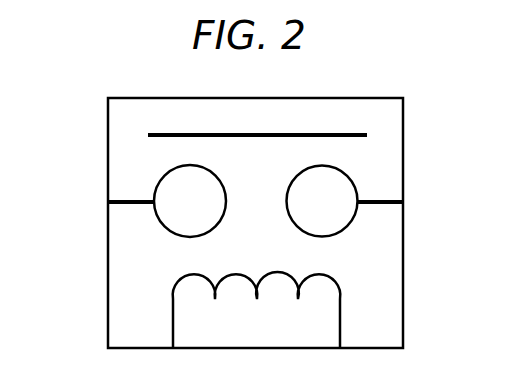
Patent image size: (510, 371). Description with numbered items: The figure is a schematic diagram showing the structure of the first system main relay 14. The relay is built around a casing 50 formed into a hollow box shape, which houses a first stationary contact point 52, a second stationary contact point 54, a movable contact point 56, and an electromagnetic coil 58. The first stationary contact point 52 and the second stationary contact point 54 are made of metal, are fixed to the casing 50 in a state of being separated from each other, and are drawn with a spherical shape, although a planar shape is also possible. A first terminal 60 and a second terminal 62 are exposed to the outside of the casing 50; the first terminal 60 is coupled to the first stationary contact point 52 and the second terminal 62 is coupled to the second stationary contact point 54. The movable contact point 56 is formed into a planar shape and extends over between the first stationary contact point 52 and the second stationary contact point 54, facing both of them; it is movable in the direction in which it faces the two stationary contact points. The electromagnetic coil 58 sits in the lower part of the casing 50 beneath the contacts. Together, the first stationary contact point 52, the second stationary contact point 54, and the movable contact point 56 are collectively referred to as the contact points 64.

The first system main relay 14 is at (382, 97).
The casing 50 is at (330, 97).
The first stationary contact point 52 is at (158, 232).
The second stationary contact point 54 is at (342, 231).
The movable contact point 56 is at (247, 134).
The electromagnetic coil 58 is at (237, 273).
The first terminal 60 is at (107, 209).
The second terminal 62 is at (405, 205).
The contact points 64 is at (162, 254).